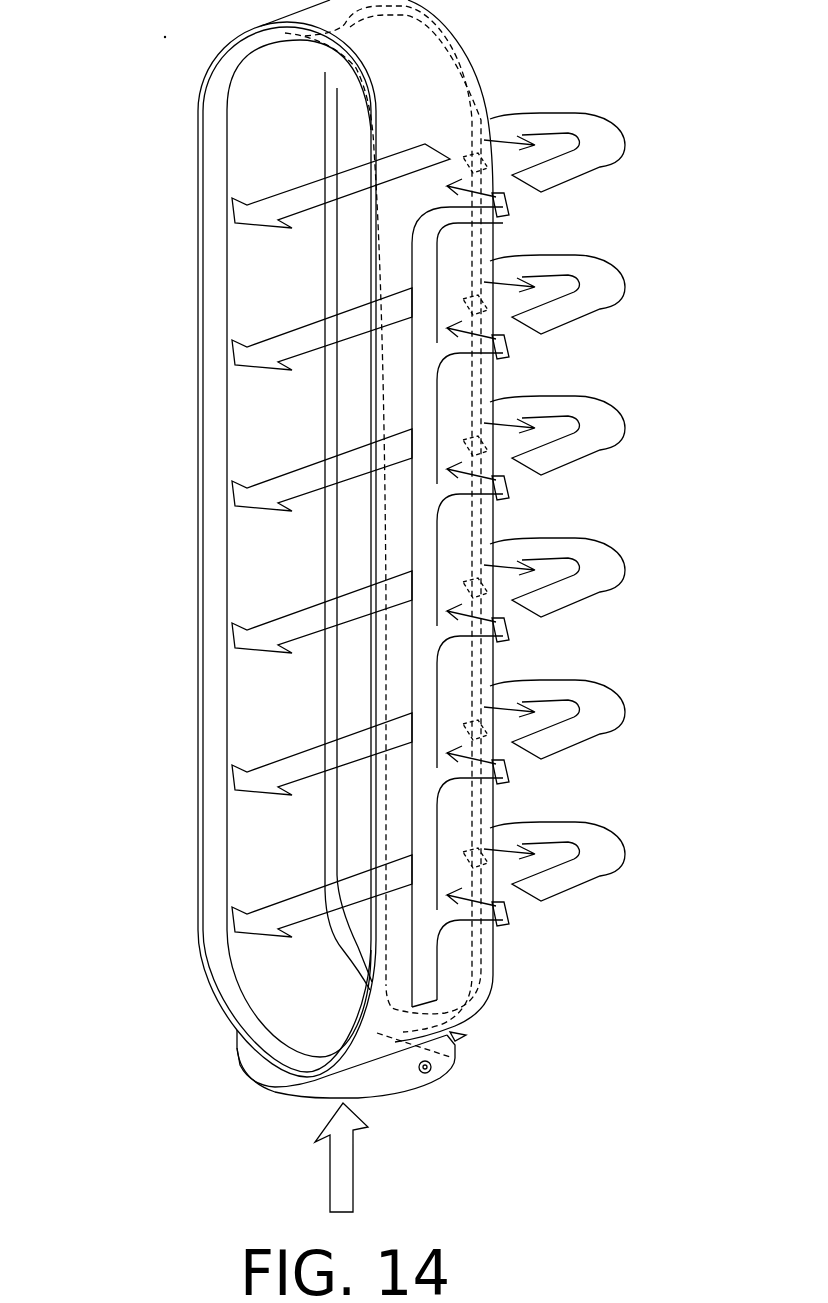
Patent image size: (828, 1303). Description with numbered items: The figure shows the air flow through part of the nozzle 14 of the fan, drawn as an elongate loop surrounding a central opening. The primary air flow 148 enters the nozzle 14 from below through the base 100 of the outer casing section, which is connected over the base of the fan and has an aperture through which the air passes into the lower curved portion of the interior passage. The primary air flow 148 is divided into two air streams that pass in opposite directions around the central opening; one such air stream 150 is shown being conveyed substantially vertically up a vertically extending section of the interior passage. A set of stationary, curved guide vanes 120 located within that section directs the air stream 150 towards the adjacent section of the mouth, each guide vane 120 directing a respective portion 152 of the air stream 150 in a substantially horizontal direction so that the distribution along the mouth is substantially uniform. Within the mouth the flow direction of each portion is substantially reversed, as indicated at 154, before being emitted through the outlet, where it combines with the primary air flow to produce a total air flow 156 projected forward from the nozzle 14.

The nozzle 14 is at (156, 767).
The base of the outer casing section 100 is at (426, 1073).
The guide vanes 120 is at (484, 167).
The primary air flow 148 is at (306, 1170).
The air stream 150 is at (427, 963).
The portion of the air stream 152 is at (506, 216).
The reversed flow direction 154 is at (617, 166).
The total air flow 156 is at (232, 640).